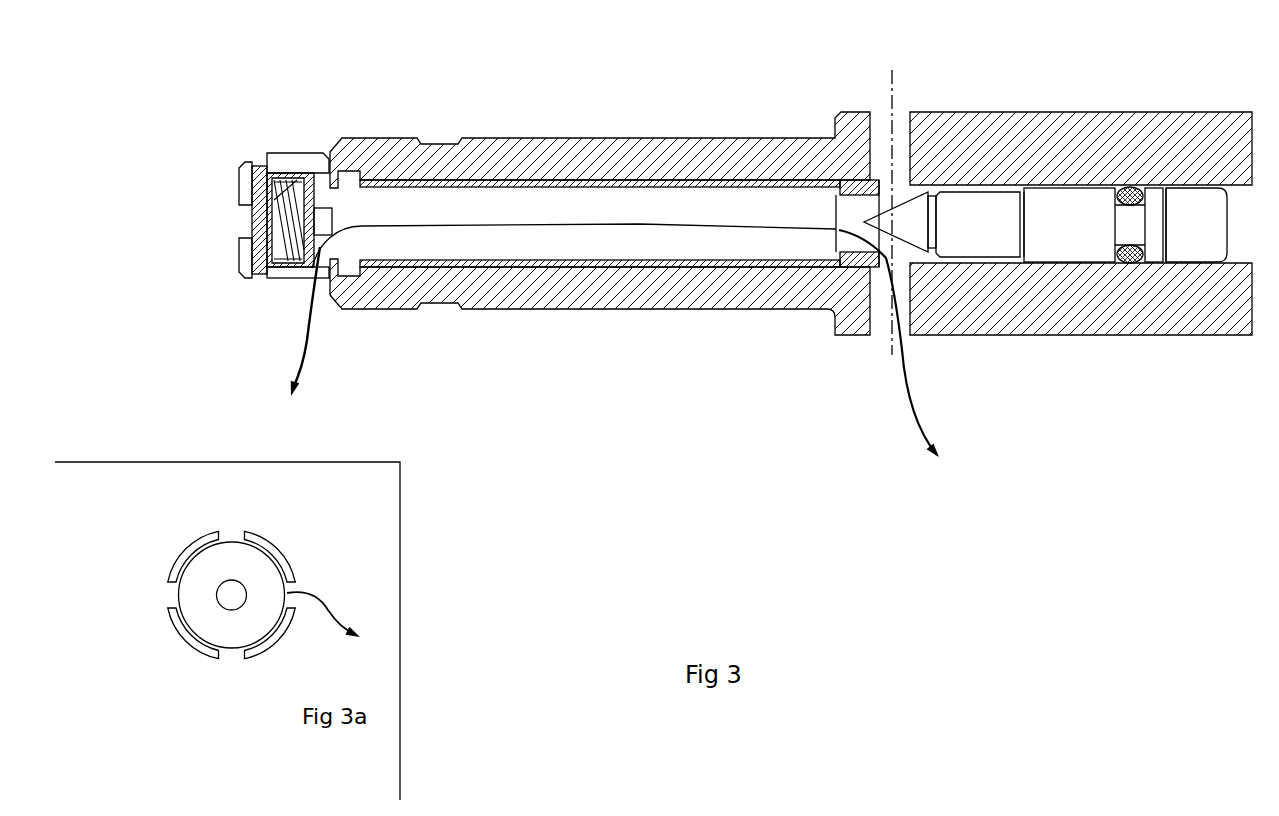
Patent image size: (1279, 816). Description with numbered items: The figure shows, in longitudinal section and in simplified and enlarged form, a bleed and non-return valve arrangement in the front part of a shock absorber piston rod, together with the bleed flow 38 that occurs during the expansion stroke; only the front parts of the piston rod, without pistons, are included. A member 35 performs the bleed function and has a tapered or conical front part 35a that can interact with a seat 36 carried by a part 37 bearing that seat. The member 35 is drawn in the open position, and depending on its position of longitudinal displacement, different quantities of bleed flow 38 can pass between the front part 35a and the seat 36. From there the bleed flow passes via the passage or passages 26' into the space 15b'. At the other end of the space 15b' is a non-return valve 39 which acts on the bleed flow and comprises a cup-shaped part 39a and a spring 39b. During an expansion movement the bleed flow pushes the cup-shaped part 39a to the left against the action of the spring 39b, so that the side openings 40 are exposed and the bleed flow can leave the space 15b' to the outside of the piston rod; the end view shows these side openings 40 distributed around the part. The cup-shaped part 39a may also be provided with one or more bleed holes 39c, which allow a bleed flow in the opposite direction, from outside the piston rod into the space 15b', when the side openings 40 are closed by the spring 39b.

In FIG. 3, the side openings 40 is at (295, 163).
In FIG. 3A, the side openings 40 is at (188, 638).
In FIG. 3, the non-return valve 39 is at (275, 276).
In FIG. 3, the cup-shaped part 39a is at (306, 220).
In FIG. 3, the spring 39b is at (268, 197).
In FIG. 3, the bleed hole 39c is at (283, 243).
In FIG. 3, the bleed flow 38 is at (307, 328).
In FIG. 3, the space 15b' is at (574, 331).
In FIG. 3, the part bearing the seat 37 is at (775, 258).
In FIG. 3, the seat 36 is at (850, 258).
In FIG. 3, the passage 26' is at (855, 272).
In FIG. 3, the front part 35a is at (908, 222).
In FIG. 3, the member performing the bleed function 35 is at (1073, 223).